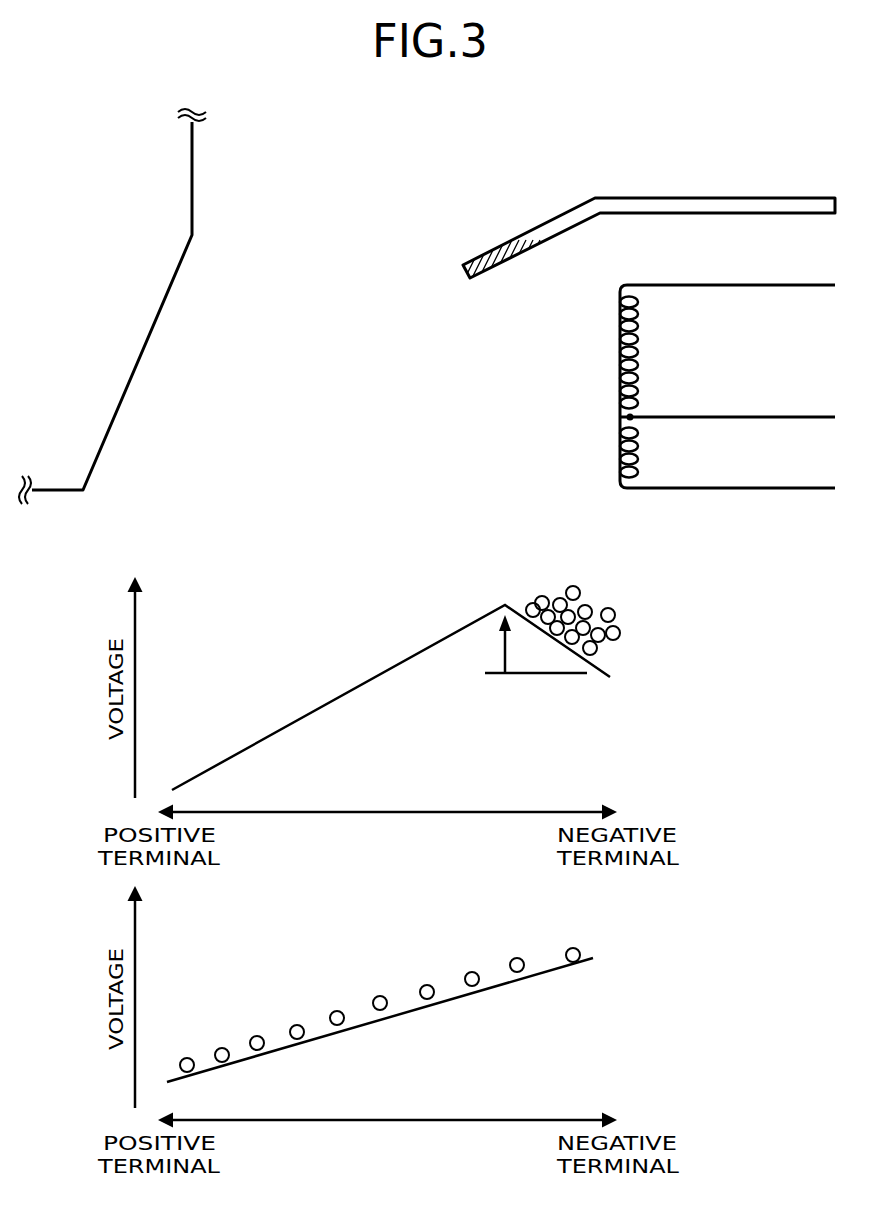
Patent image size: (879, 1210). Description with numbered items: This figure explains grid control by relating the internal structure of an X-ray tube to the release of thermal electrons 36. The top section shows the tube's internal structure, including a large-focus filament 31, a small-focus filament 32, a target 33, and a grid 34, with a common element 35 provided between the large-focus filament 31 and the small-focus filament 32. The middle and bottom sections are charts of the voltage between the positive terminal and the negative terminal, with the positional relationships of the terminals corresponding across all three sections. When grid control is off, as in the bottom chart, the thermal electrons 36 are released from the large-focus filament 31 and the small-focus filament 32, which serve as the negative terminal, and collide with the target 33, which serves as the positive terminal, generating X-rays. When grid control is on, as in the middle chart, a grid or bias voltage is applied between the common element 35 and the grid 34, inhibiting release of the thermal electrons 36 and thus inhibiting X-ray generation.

The large-focus filament 31 is at (618, 325).
The small-focus filament 32 is at (618, 457).
The target 33 is at (194, 157).
The grid 34 is at (525, 232).
The common element 35 is at (752, 407).
The thermal electrons 36 is at (616, 612).